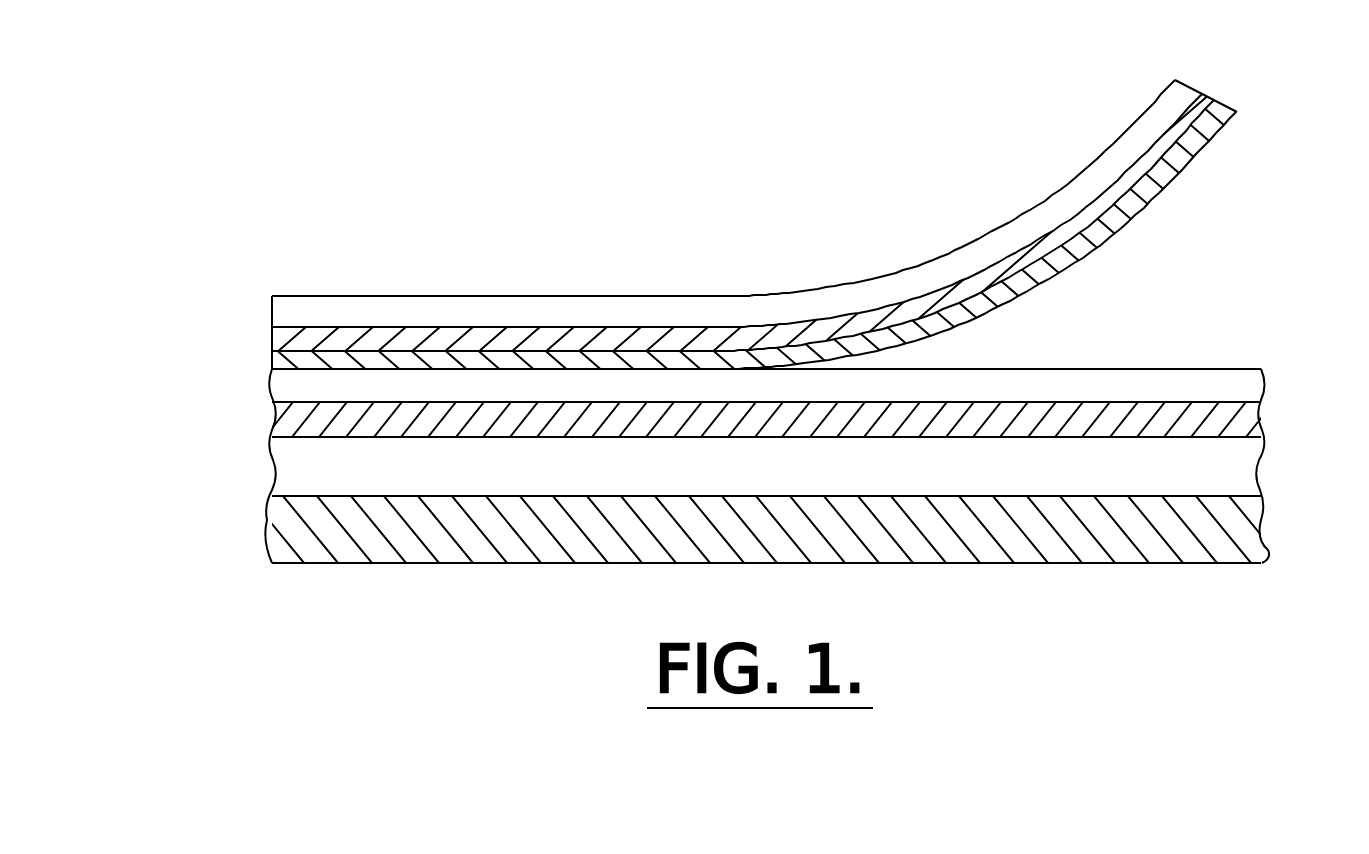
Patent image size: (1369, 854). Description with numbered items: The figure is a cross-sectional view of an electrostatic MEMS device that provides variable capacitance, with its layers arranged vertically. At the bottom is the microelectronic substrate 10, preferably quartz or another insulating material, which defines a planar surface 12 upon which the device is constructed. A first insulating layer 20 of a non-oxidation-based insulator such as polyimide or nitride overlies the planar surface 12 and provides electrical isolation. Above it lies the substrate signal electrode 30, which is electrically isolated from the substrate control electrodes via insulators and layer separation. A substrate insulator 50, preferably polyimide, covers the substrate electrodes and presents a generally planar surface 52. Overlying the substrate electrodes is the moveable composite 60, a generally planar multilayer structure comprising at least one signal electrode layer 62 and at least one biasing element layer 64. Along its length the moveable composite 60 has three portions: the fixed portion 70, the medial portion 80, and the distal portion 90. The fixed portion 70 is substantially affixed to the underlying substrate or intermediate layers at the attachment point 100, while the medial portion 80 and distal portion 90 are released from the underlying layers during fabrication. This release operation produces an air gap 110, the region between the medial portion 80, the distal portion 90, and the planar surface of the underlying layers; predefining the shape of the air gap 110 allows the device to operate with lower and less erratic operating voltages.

The microelectronic substrate 10 is at (1267, 537).
The planar surface 12 is at (300, 500).
The first insulating layer 20 is at (1253, 475).
The substrate signal electrode 30 is at (1257, 420).
The substrate insulator 50 is at (1260, 387).
The planar surface 52 is at (1220, 368).
The moveable composite 60 is at (1178, 74).
The signal electrode layer 62 is at (272, 327).
The biasing element layer 64 is at (272, 357).
The fixed portion 70 is at (682, 242).
The medial portion 80 is at (682, 253).
The distal portion 90 is at (1120, 43).
The attachment point 100 is at (272, 369).
The air gap 110 is at (1148, 288).